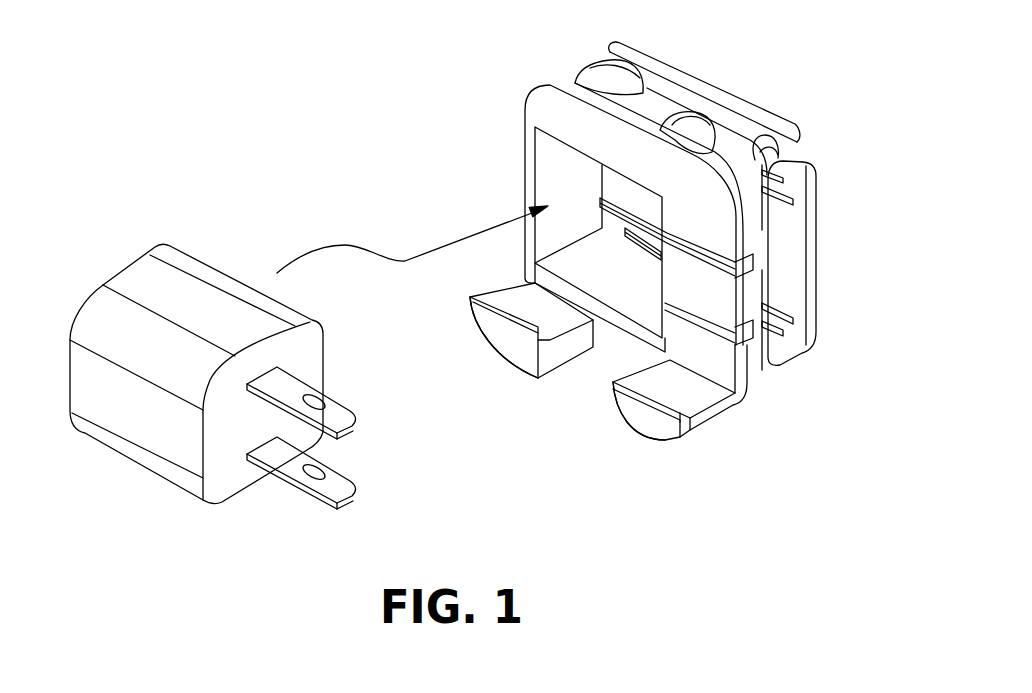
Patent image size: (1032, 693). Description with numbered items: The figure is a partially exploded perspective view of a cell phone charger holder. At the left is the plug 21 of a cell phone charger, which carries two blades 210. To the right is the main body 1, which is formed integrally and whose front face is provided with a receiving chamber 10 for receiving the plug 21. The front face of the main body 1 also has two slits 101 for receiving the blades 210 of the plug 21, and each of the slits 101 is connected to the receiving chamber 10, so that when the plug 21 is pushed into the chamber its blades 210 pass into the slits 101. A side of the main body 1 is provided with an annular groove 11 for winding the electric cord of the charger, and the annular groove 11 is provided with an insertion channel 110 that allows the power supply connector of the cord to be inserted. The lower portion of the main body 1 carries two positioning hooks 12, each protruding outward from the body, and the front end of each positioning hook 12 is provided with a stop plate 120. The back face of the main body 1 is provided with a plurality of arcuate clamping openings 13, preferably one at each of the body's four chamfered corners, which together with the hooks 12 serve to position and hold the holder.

The main body 1 is at (507, 150).
The receiving chamber 10 is at (550, 175).
The annular groove 11 is at (653, 120).
The positioning hooks 12 is at (563, 363).
The arcuate clamping openings 13 is at (587, 83).
The plug 21 is at (140, 273).
The blades 210 is at (285, 458).
The slits 101 is at (714, 258).
The insertion channel 110 is at (773, 205).
The stop plate 120 is at (492, 287).